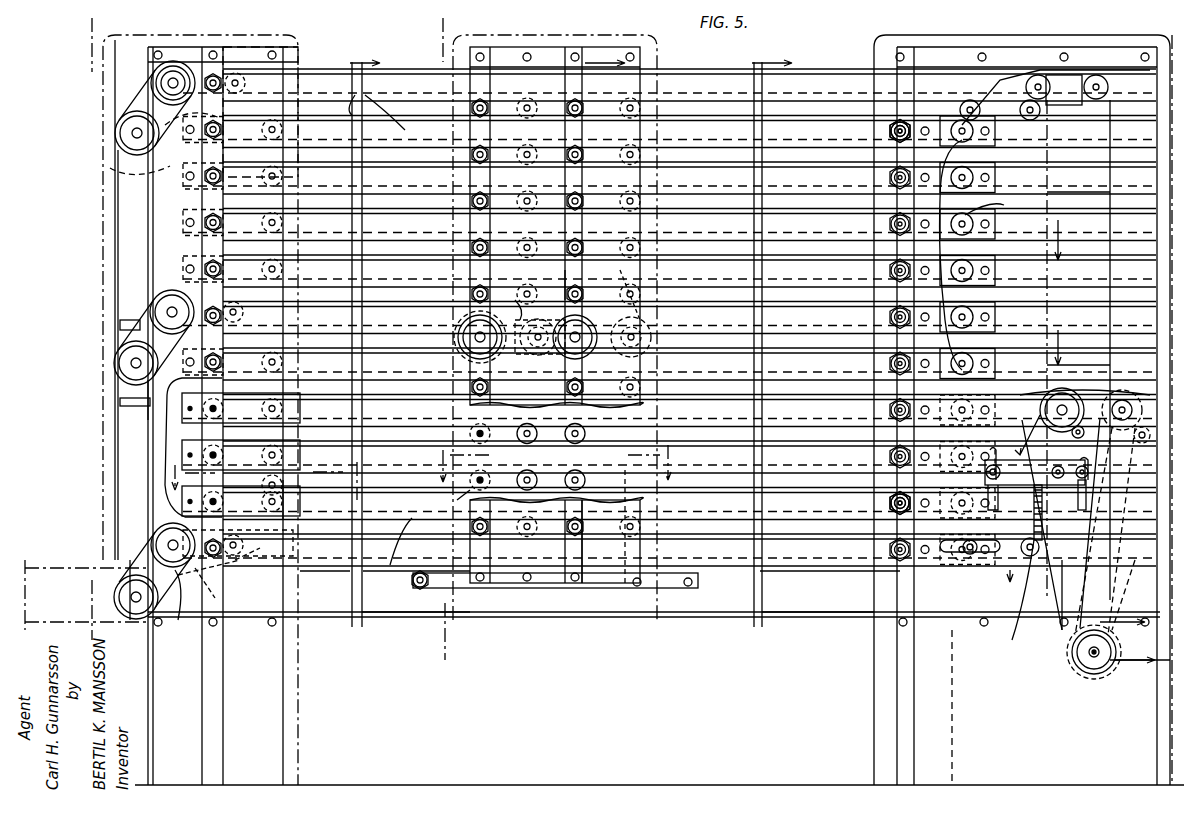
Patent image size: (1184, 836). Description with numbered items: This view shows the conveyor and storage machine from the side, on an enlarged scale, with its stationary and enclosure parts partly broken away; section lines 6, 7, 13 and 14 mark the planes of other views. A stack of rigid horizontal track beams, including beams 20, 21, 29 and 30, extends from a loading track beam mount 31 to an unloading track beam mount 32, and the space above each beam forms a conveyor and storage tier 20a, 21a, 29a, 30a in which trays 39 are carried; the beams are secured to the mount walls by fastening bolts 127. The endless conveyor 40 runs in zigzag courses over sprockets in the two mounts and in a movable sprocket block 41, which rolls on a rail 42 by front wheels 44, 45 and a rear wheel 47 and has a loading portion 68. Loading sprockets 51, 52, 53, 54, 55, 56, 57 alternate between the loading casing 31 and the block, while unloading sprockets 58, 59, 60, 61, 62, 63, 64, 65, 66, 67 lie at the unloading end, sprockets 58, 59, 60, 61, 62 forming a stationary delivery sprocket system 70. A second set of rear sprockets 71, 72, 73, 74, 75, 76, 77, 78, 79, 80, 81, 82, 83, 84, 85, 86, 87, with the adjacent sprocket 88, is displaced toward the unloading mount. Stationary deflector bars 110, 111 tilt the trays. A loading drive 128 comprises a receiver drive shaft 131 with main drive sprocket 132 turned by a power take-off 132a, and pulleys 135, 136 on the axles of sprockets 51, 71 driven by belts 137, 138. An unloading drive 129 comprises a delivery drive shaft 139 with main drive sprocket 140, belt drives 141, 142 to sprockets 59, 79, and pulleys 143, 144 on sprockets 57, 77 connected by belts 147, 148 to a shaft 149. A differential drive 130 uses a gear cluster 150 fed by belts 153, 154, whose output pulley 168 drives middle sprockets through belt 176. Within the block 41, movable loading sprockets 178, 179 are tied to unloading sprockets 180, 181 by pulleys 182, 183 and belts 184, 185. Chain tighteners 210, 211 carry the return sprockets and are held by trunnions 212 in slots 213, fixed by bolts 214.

The section line 6— 6 is at (103, 30).
The section line 7- 7 is at (262, 472).
The section line 13- 13 is at (468, 25).
The section line 14- 14 is at (555, 462).
The track beam 20 is at (700, 95).
The conveyor and storage tier 20a is at (860, 68).
The track beam 21 is at (690, 137).
The conveyor and storage tier 21a is at (840, 96).
The track beam 29 is at (416, 575).
The conveyor and storage tier 29a is at (785, 492).
The track beam 30 is at (342, 564).
The conveyor and storage tier 30a is at (813, 533).
The loading track beam mount 31 is at (320, 660).
The unloading track beam mount 32 is at (856, 641).
The tray 39 is at (350, 90).
The conveyor 40 is at (405, 135).
The sprocket block 41 is at (590, 648).
The horizontal rail 42 is at (572, 620).
The front wheel 44 is at (420, 585).
The front wheel 45 is at (632, 590).
The rear wheel 47 is at (686, 588).
The stationary loading sprocket 51 is at (209, 573).
The movable loading sprocket 52 is at (465, 535).
The loading sprocket 53 is at (238, 493).
The loading sprocket 54 is at (465, 492).
The loading sprocket 55 is at (205, 140).
The loading sprocket 56 is at (470, 118).
The loading sprocket 57 is at (170, 83).
The delivery sprocket 58 is at (1030, 72).
The offset stationary delivery sprocket 59 is at (1070, 400).
The offset stationary delivery sprocket 60 is at (1076, 437).
The stationary return sprocket 61 is at (1078, 482).
The stationary return sprocket 62 is at (1005, 485).
The unloading sprocket 63 is at (982, 112).
The unloading sprocket 64 is at (582, 106).
The unloading sprocket 65 is at (890, 130).
The unloading sprocket 66 is at (590, 518).
The unloading sprocket 67 is at (965, 558).
The loading portion 68 is at (887, 500).
The delivery sprocket system 70 is at (1093, 343).
The rear loading sprocket 71 is at (238, 562).
The rear sprocket 72 is at (530, 538).
The rear sprocket 73 is at (267, 494).
The rear sprocket 74 is at (530, 478).
The rear sprocket 75 is at (260, 130).
The rear sprocket 76 is at (537, 118).
The rear loading sprocket 77 is at (248, 84).
The rear sprocket 78 is at (1107, 80).
The rear offset delivery sprocket 79 is at (1140, 390).
The rear delivery sprocket 80 is at (1135, 437).
The rear return sprocket 81 is at (1112, 480).
The rear return sprocket 82 is at (1050, 468).
The rear standby sprocket 83 is at (1032, 117).
The rear sprocket 84 is at (630, 100).
The rear sprocket 85 is at (995, 150).
The rear sprocket 86 is at (628, 518).
The rear sprocket 87 is at (1013, 576).
The roller block 88 is at (955, 490).
The stationary deflector bar 110 is at (188, 455).
The stationary deflector bar 111 is at (989, 255).
The fastening bolt 127 is at (185, 268).
The loading drive 128 is at (90, 517).
The unloading drive 129 is at (1140, 687).
The differential drive 130 is at (85, 386).
The receiver drive shaft 131 is at (136, 596).
The main drive sprocket 132 is at (150, 612).
The power take-off 132a is at (78, 571).
The pulley 135 is at (155, 542).
The pulley 136 is at (235, 525).
The belt 137 is at (178, 620).
The belt 138 is at (216, 620).
The delivery drive shaft 139 is at (1090, 655).
The main drive sprocket 140 is at (1117, 657).
The front belt drive 141 is at (1058, 583).
The back belt drive 142 is at (1120, 584).
The pulley 143 is at (173, 60).
The pulley 144 is at (250, 55).
The belt 147 is at (130, 115).
The belt 148 is at (102, 168).
The shaft 149 is at (132, 133).
The differential gear cluster 150 is at (127, 378).
The belt 153 is at (115, 545).
The belt 154 is at (114, 204).
The output take-off pulley means 168 is at (124, 360).
The belt means 176 is at (152, 299).
The movable loading sprocket 178 is at (472, 328).
The movable loading sprocket 179 is at (510, 350).
The unloading sprocket 180 is at (545, 352).
The unloading sprocket 181 is at (620, 286).
The pulley 182 is at (472, 350).
The pulley 183 is at (560, 290).
The belt 184 is at (520, 310).
The belt 185 is at (592, 350).
The chain-tightener member 210 is at (1005, 577).
The chain-tightener member 211 is at (1022, 425).
The trunnion 212 is at (1082, 510).
The slot 213 is at (1002, 560).
The bolt 214 is at (1014, 602).